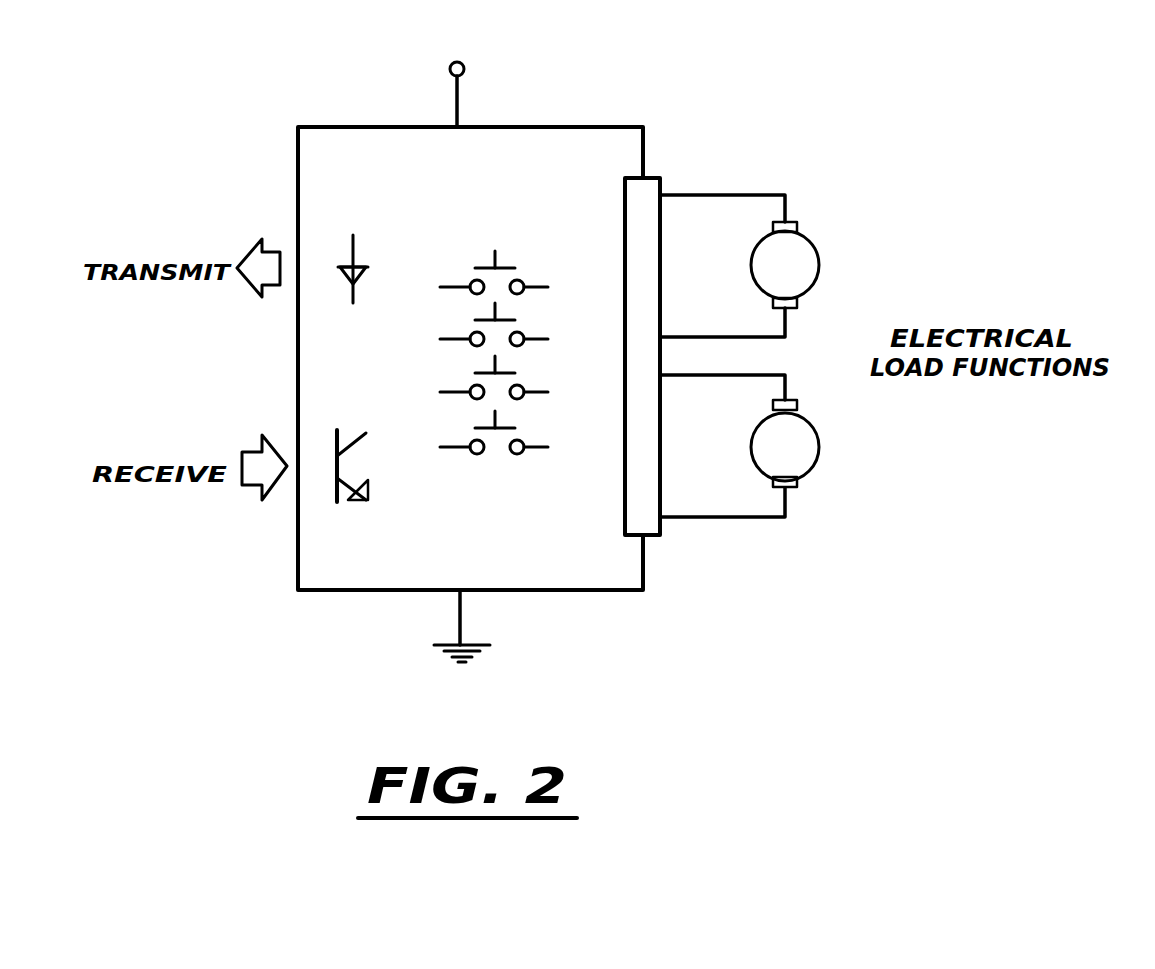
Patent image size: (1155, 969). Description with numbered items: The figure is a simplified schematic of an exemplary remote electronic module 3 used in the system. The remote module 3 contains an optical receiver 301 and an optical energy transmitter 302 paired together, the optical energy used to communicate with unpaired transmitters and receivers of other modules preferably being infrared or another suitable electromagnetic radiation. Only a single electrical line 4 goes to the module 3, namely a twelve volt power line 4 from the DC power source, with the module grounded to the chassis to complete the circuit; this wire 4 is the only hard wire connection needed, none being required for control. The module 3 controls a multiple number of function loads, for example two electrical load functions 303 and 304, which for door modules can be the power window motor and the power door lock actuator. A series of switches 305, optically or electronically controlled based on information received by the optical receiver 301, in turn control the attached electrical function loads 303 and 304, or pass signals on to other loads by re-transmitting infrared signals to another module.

The remote module 3 is at (668, 103).
The electrical line 4 is at (460, 92).
The optical receiver 301 is at (358, 543).
The optical energy transmitter 302 is at (368, 335).
The electrical load function 303 is at (873, 343).
The electrical load function 304 is at (872, 344).
The switches 305 is at (487, 236).